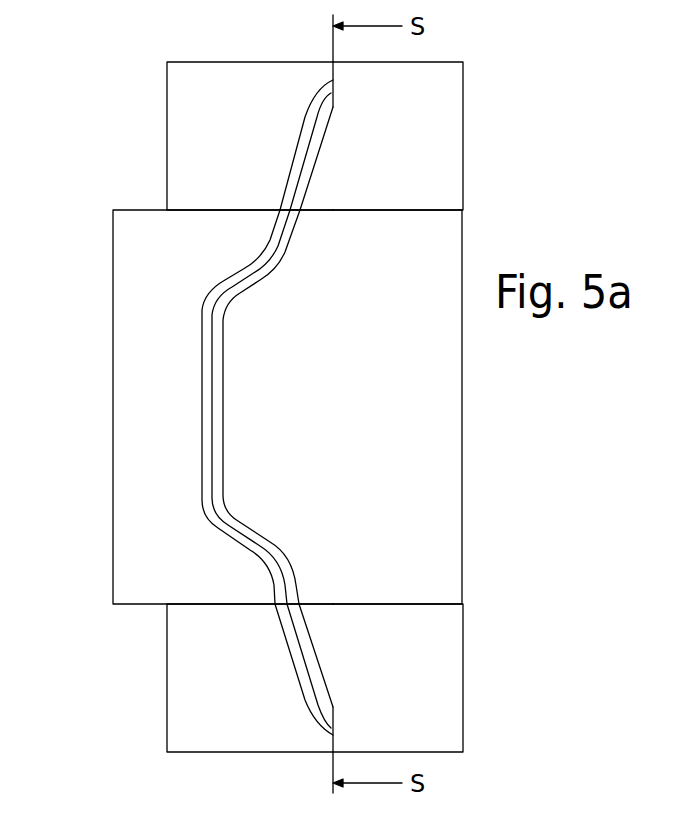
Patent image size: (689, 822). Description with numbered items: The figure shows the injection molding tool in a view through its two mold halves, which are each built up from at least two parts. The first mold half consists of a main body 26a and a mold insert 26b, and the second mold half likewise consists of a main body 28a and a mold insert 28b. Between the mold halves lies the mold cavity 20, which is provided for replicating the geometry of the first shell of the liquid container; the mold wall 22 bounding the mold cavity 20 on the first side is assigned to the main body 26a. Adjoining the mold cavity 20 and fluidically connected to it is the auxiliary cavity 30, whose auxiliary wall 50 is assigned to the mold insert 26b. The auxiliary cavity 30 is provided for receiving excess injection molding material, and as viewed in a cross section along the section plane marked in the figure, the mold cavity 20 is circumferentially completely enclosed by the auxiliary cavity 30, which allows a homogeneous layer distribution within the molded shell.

The mold cavity 20 is at (303, 418).
The mold wall 22 is at (205, 392).
The main body 26a is at (150, 495).
The mold insert 26b is at (188, 127).
The main body 28a is at (418, 510).
The mold insert 28b is at (450, 78).
The auxiliary cavity 30 is at (313, 718).
The auxiliary wall 50 is at (290, 152).